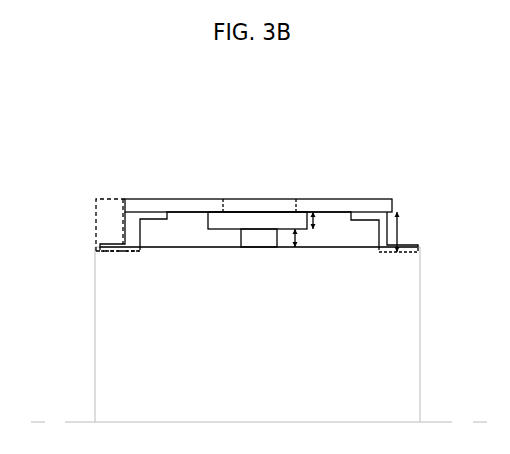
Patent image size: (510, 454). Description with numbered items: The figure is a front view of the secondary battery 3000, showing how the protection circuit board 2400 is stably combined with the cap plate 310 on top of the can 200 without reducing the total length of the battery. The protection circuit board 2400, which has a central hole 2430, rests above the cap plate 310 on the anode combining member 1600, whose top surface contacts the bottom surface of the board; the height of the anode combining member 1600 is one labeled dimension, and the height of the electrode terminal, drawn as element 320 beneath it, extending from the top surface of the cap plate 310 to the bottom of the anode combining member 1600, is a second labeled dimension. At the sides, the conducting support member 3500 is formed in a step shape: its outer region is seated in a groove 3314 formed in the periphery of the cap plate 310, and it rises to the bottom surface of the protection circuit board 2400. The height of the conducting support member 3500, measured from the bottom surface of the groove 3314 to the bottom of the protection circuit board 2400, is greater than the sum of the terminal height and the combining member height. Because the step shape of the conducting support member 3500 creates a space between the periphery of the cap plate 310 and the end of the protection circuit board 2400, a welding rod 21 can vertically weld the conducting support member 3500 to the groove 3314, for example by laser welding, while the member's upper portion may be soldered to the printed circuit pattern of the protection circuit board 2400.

The secondary battery 3000 is at (64, 118).
The can 200 is at (410, 343).
The protection circuit board 2400 is at (341, 190).
The central hole 2430 is at (257, 206).
The cap plate 310 is at (320, 247).
The anode combining member 1600 is at (225, 224).
The support block 320 is at (259, 242).
The conducting support member 3500 is at (110, 244).
The welding rod 21 is at (106, 199).
The groove 3314 is at (108, 252).